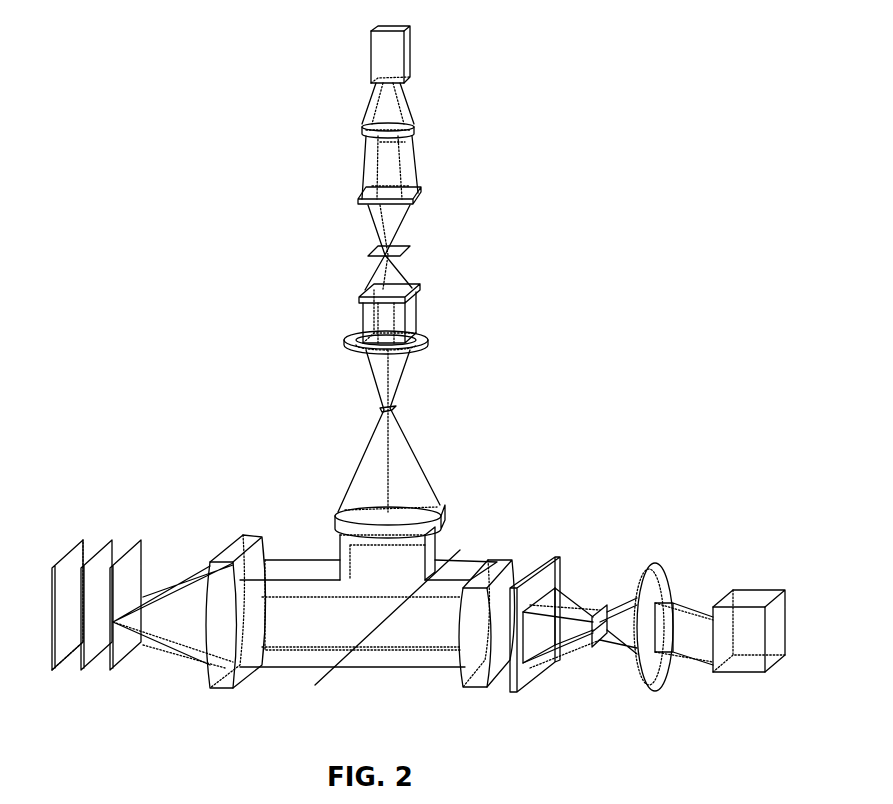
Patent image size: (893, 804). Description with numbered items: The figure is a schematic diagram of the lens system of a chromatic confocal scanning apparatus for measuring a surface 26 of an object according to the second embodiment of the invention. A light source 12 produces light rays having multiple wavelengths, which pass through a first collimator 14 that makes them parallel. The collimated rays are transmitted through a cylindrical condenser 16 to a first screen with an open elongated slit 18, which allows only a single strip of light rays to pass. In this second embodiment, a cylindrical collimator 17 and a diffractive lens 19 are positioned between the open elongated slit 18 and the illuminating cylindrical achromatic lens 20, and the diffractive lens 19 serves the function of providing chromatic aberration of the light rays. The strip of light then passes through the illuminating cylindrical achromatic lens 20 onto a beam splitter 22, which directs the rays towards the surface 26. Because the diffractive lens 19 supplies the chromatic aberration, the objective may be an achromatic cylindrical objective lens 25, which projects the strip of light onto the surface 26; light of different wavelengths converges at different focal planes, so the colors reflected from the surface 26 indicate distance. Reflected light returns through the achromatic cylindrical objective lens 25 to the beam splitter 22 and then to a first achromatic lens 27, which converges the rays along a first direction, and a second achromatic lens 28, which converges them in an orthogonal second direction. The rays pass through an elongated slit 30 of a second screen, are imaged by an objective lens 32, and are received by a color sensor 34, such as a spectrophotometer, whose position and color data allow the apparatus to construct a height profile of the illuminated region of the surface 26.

The light source 12 is at (414, 63).
The first collimator 14 is at (362, 123).
The cylindrical condenser 16 is at (430, 186).
The cylindrical collimator 17 is at (424, 285).
The open elongated slit 18 is at (370, 250).
The diffractive lens 19 is at (434, 338).
The illuminating cylindrical achromatic lens 20 is at (339, 508).
The beam splitter 22 is at (330, 677).
The achromatic cylindrical objective lens 25 is at (244, 528).
The surface 26 is at (110, 542).
The first achromatic lens 27 is at (495, 560).
The second achromatic lens 28 is at (546, 560).
The elongated slit 30 is at (610, 600).
The objective lens 32 is at (662, 562).
The color sensor 34 is at (762, 583).